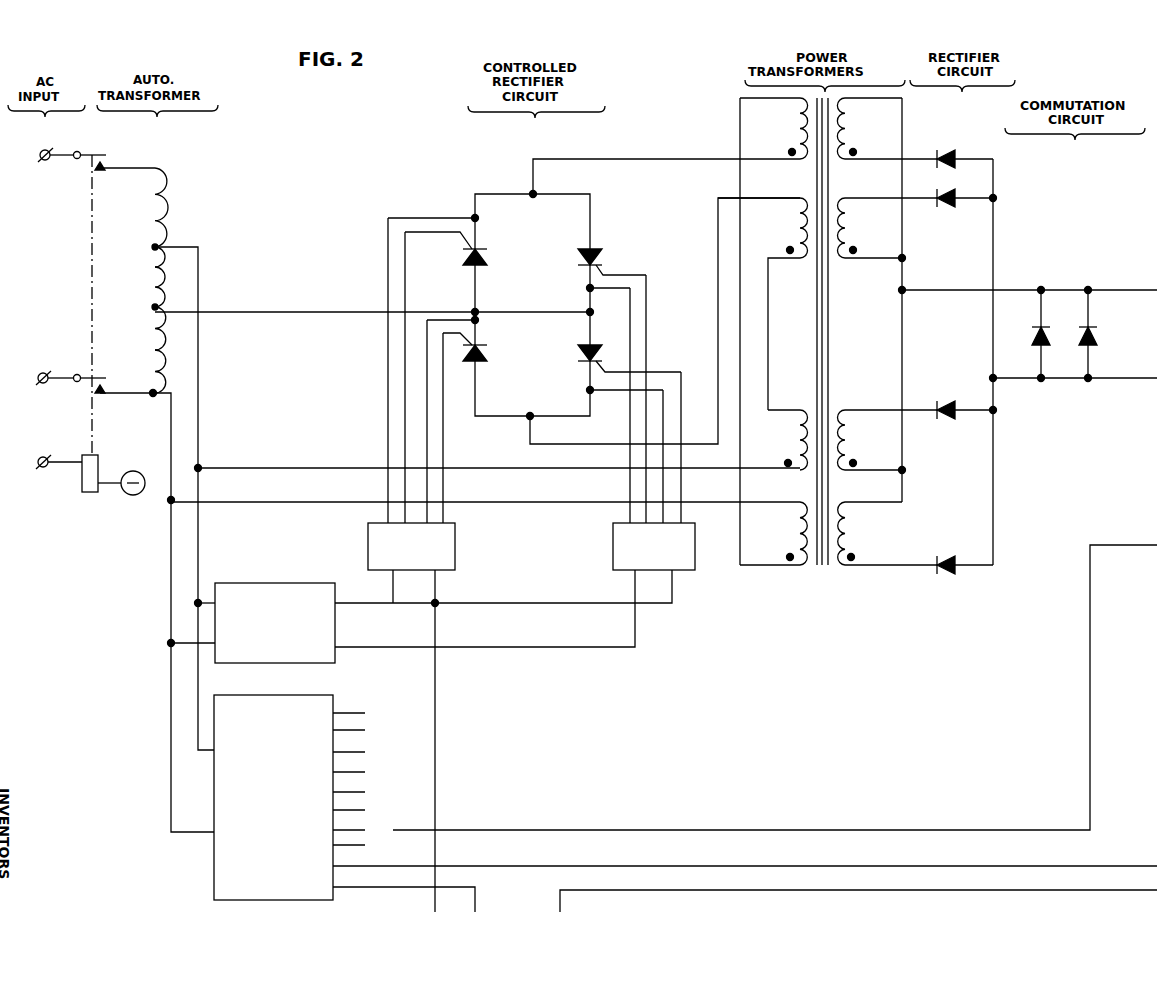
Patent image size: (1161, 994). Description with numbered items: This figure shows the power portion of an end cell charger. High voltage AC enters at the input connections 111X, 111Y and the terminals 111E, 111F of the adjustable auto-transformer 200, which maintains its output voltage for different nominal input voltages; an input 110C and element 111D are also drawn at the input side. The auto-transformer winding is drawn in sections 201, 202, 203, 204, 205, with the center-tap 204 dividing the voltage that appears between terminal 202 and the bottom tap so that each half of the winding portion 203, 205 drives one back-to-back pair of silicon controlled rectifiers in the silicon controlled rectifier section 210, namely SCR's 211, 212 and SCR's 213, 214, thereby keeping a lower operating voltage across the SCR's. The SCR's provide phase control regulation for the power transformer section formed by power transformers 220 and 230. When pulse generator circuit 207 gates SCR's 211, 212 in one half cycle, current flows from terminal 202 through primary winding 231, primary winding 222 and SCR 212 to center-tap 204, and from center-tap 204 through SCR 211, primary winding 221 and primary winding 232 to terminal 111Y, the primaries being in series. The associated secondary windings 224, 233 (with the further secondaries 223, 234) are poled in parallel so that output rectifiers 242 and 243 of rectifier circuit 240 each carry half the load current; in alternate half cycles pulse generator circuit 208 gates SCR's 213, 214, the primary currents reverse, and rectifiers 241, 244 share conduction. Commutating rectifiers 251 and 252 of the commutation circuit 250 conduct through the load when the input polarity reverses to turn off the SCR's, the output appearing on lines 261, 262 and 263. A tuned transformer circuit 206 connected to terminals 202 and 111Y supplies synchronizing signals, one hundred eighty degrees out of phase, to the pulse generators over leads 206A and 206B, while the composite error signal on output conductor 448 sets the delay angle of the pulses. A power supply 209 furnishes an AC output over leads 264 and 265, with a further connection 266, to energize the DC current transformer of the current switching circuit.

The input connection 111X is at (50, 145).
The autotransformer input terminal 111E is at (97, 143).
The input connection 111Y is at (50, 367).
The autotransformer input terminal 111F is at (107, 371).
The input terminal 110C is at (54, 452).
The resistor / indicator element 111D is at (104, 471).
The auto-transformer 200 is at (166, 139).
The autotransformer winding section 201 is at (135, 207).
The terminal 202 is at (134, 253).
The winding portion 203 is at (134, 287).
The center-tap 204 is at (134, 325).
The winding portion 205 is at (134, 364).
The tuned transformer circuit 206 is at (244, 590).
The lead 206A is at (362, 600).
The lead 206B is at (391, 644).
The pulse generator circuit 207 is at (365, 548).
The pulse generator circuit 208 is at (608, 548).
The power supply 209 is at (244, 701).
The silicon controlled rectifier section 210 is at (556, 141).
The silicon controlled rectifier 211 is at (452, 242).
The silicon controlled rectifier 212 is at (472, 341).
The silicon controlled rectifier 213 is at (591, 268).
The silicon controlled rectifier 214 is at (609, 367).
The power transformer 220 is at (839, 283).
The primary winding 221 is at (774, 128).
The primary winding 222 is at (763, 304).
The secondary winding 223 is at (887, 128).
The secondary winding 224 is at (887, 230).
The power transformer 230 is at (836, 595).
The primary winding 231 is at (779, 440).
The primary winding 232 is at (773, 533).
The secondary winding 233 is at (887, 442).
The secondary winding 234 is at (887, 533).
The rectifier circuit 240 is at (980, 113).
The rectifier 241 is at (960, 150).
The rectifier 242 is at (960, 208).
The rectifier 243 is at (960, 419).
The rectifier 244 is at (956, 575).
The commutation circuit 250 is at (1094, 160).
The commutating rectifier 251 is at (1024, 334).
The commutating rectifier 252 is at (1105, 334).
The output line 261 is at (1146, 290).
The output line 262 is at (1148, 381).
The output line 263 is at (1131, 546).
The lead 264 is at (481, 865).
The lead 265 is at (574, 887).
The output line 266 is at (475, 910).
The output conductor 448 is at (441, 602).